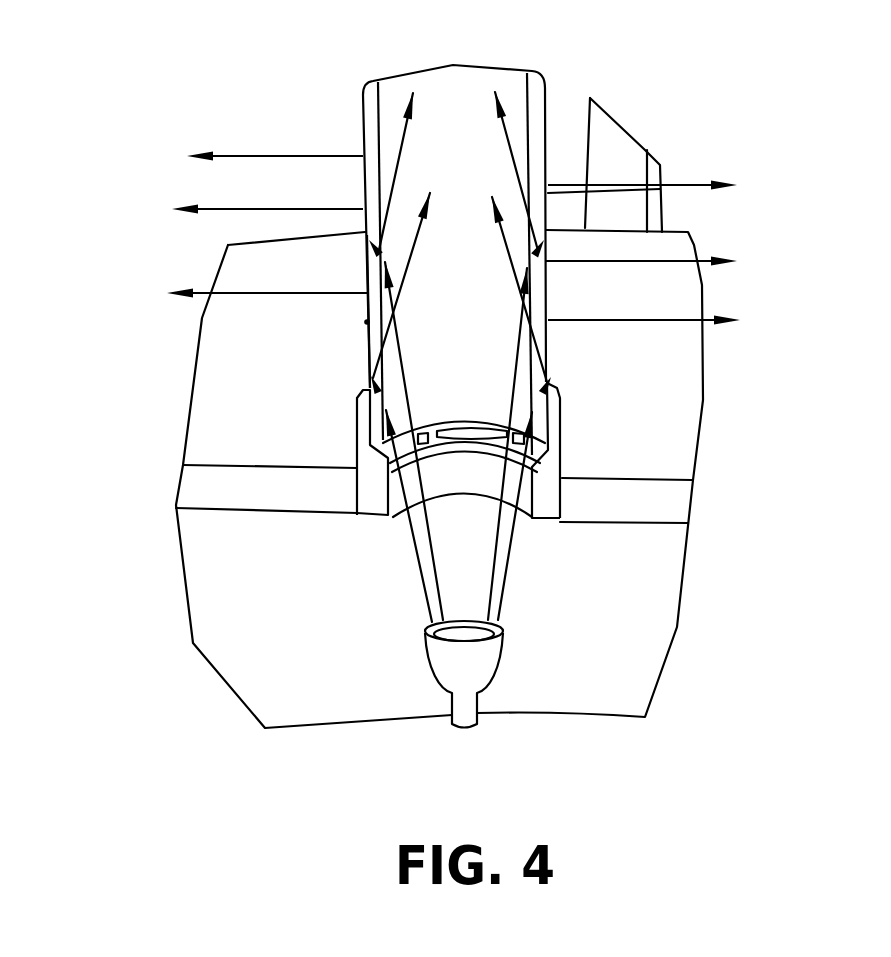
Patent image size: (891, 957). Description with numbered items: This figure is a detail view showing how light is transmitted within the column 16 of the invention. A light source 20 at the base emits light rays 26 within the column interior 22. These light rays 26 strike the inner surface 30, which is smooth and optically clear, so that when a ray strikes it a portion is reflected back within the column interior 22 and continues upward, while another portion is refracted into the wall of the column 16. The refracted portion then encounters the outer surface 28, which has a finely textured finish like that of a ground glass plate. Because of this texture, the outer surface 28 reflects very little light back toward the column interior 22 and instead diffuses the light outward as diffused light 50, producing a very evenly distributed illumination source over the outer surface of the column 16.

The column 16 is at (363, 128).
The light source 20 is at (462, 730).
The column interior 22 is at (458, 203).
The light rays 26 is at (560, 398).
The outer surface 28 is at (367, 322).
The inner surface 30 is at (371, 378).
The diffused light 50 is at (167, 293).